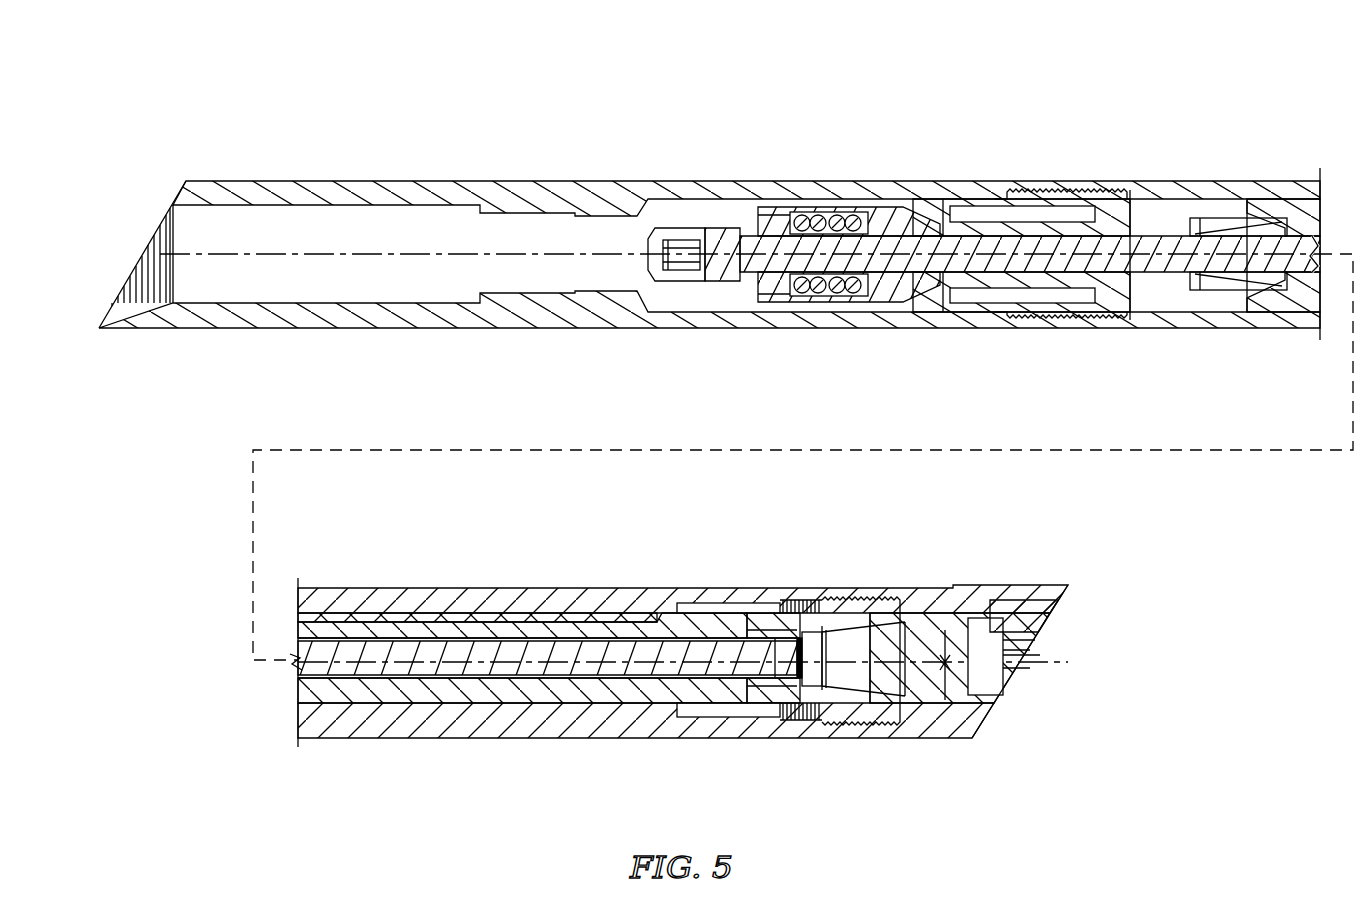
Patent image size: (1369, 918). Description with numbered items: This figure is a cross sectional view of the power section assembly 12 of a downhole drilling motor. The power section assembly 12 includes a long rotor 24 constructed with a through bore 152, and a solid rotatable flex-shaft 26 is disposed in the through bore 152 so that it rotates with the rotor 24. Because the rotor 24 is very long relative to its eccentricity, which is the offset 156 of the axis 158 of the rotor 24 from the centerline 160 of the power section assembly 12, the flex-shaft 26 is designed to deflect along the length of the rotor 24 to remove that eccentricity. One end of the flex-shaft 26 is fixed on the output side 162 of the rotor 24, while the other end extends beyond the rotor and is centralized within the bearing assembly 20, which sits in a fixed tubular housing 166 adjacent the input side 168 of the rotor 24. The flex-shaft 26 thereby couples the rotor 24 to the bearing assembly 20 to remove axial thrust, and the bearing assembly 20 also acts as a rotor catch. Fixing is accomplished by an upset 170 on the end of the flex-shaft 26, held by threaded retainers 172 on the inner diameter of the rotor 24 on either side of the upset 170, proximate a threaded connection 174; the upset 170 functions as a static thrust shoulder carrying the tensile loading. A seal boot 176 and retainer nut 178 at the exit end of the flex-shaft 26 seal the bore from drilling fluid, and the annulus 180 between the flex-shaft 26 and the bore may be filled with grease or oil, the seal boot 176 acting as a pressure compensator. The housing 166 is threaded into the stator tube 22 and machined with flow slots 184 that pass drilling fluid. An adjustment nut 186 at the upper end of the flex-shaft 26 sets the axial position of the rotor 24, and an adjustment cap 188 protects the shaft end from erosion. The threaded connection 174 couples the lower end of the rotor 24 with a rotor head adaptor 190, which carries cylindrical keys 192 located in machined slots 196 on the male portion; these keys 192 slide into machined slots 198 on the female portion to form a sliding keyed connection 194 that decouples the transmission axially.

The power section assembly 12 is at (171, 141).
The bearing assembly 20 is at (809, 211).
The stator tube 22 is at (1150, 185).
The rotor 24 is at (687, 606).
The flex-shaft 26 is at (575, 650).
The through bore 152 is at (675, 655).
The offset 156 is at (946, 668).
The axis 158 is at (895, 630).
The centerline 160 is at (848, 690).
The output side 162 is at (782, 628).
The housing 166 is at (890, 302).
The input side 168 is at (1205, 118).
The upset 170 is at (770, 630).
The threaded retainers 172 is at (790, 672).
The threaded connection 174 is at (880, 698).
The seal boot 176 is at (1160, 280).
The retainer nut 178 is at (1226, 215).
The annulus 180 is at (557, 632).
The flow slots 184 is at (1105, 193).
The adjustment nut 186 is at (722, 283).
The adjustment cap 188 is at (682, 281).
The rotor head adaptor 190 is at (947, 600).
The keys 192 is at (1020, 620).
The keyed connection 194 is at (1035, 691).
The machined slots 196 is at (1020, 636).
The machined slots 198 is at (1060, 598).